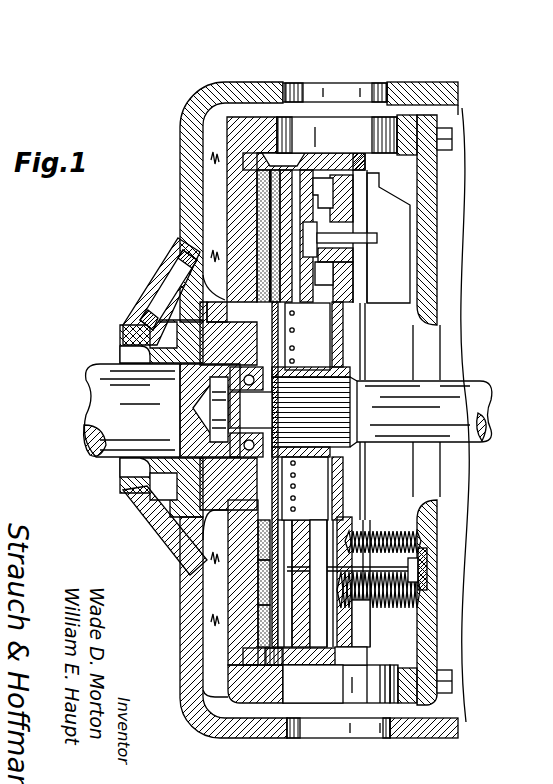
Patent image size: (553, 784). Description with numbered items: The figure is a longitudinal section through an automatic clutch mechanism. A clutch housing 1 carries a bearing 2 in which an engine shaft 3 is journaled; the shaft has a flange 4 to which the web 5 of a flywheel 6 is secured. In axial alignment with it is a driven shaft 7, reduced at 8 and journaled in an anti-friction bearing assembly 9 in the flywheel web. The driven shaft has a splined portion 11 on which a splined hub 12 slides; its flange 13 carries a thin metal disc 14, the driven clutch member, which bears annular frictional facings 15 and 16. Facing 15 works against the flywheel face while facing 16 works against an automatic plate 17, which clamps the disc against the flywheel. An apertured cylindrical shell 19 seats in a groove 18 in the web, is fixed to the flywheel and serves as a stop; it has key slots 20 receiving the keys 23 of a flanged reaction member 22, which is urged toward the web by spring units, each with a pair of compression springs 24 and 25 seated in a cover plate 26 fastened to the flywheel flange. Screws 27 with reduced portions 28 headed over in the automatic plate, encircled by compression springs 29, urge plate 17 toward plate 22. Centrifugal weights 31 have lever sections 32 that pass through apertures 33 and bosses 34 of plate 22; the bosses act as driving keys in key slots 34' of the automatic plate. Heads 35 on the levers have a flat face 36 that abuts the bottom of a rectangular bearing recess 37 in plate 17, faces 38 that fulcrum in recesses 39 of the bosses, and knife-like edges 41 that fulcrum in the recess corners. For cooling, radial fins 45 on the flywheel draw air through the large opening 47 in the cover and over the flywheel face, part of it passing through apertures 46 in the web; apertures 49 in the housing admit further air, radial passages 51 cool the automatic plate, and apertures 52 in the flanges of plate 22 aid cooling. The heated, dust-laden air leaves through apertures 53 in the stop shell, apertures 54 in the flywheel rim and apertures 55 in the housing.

The clutch housing 1 is at (190, 596).
The bearing 2 is at (127, 358).
The engine shaft 3 is at (128, 447).
The flange 4 is at (220, 487).
The web 5 is at (240, 272).
The flywheel 6 is at (248, 693).
The driven shaft 7 is at (473, 398).
The reduced portion 8 is at (256, 420).
The anti-friction bearing assembly 9 is at (305, 488).
The splined portion 11 is at (357, 443).
The splined hub 12 is at (307, 352).
The flange 13 is at (284, 342).
The metal disc 14 is at (262, 497).
The frictional facing 15 is at (262, 598).
The frictional facing 16 is at (262, 617).
The automatic plate 17 is at (308, 637).
The groove 18 is at (247, 665).
The cylindrical shell 19 is at (232, 673).
The key slots 20 is at (333, 160).
The reaction member 22 is at (353, 642).
The keys 23 is at (353, 158).
The compression spring 24 is at (440, 530).
The compression spring 25 is at (370, 527).
The cover plate 26 is at (432, 623).
The screws 27 is at (430, 569).
The reduced portions 28 is at (262, 578).
The compression springs 29 is at (427, 550).
The centrifugal weights 31 is at (402, 217).
The lever sections 32 is at (350, 240).
The apertures 33 is at (340, 227).
The bosses 34 is at (366, 281).
The key slots 34' is at (359, 228).
The heads 35 is at (262, 247).
The flat face 36 is at (263, 232).
The bearing recess 37 is at (227, 197).
The faces 38 is at (350, 254).
The recesses 39 is at (307, 316).
The knife-like edges 41 is at (280, 217).
The radial fins 45 is at (212, 172).
The apertures 46 is at (223, 527).
The opening 47 is at (420, 325).
The apertures 49 is at (142, 315).
The radial passages 51 is at (321, 583).
The apertures 52 is at (358, 163).
The apertures 53 is at (313, 684).
The apertures 54 is at (320, 127).
The apertures 55 is at (372, 90).